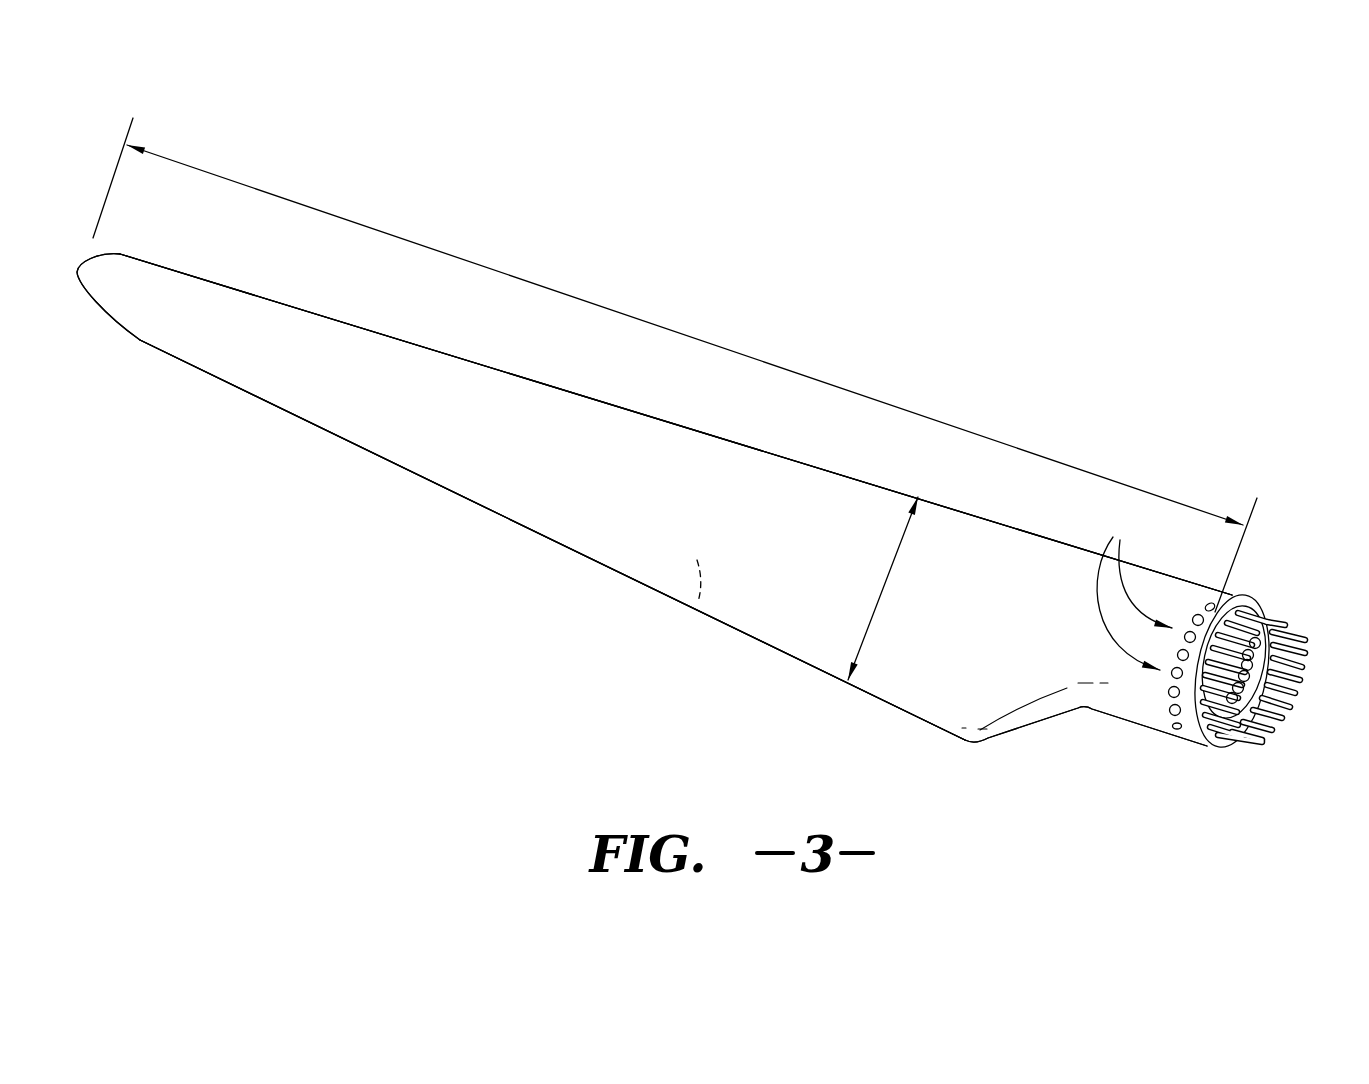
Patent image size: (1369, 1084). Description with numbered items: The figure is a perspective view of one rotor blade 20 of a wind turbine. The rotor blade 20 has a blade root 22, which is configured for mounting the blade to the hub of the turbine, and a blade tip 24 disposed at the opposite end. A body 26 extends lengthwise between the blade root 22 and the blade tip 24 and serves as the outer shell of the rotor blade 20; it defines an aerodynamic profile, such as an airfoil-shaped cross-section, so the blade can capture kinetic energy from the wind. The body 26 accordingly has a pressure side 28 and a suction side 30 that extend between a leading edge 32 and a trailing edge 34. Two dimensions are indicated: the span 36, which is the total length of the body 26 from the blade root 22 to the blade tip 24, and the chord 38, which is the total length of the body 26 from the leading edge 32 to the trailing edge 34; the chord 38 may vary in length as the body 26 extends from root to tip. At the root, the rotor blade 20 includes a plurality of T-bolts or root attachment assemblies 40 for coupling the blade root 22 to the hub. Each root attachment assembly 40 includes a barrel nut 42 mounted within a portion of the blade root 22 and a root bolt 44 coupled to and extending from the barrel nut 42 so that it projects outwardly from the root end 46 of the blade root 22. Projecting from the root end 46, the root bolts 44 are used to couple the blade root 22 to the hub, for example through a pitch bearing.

The rotor blade 20 is at (1107, 360).
The blade root 22 is at (1160, 720).
The blade tip 24 is at (78, 272).
The body 26 is at (526, 410).
The pressure side 28 is at (696, 612).
The suction side 30 is at (407, 430).
The leading edge 32 is at (747, 443).
The trailing edge 34 is at (533, 533).
The span 36 is at (723, 347).
The chord 38 is at (880, 597).
The root attachment assembly 40 is at (1134, 585).
The barrel nut 42 is at (1297, 637).
The root bolt 44 is at (1195, 617).
The root end 46 is at (1222, 748).